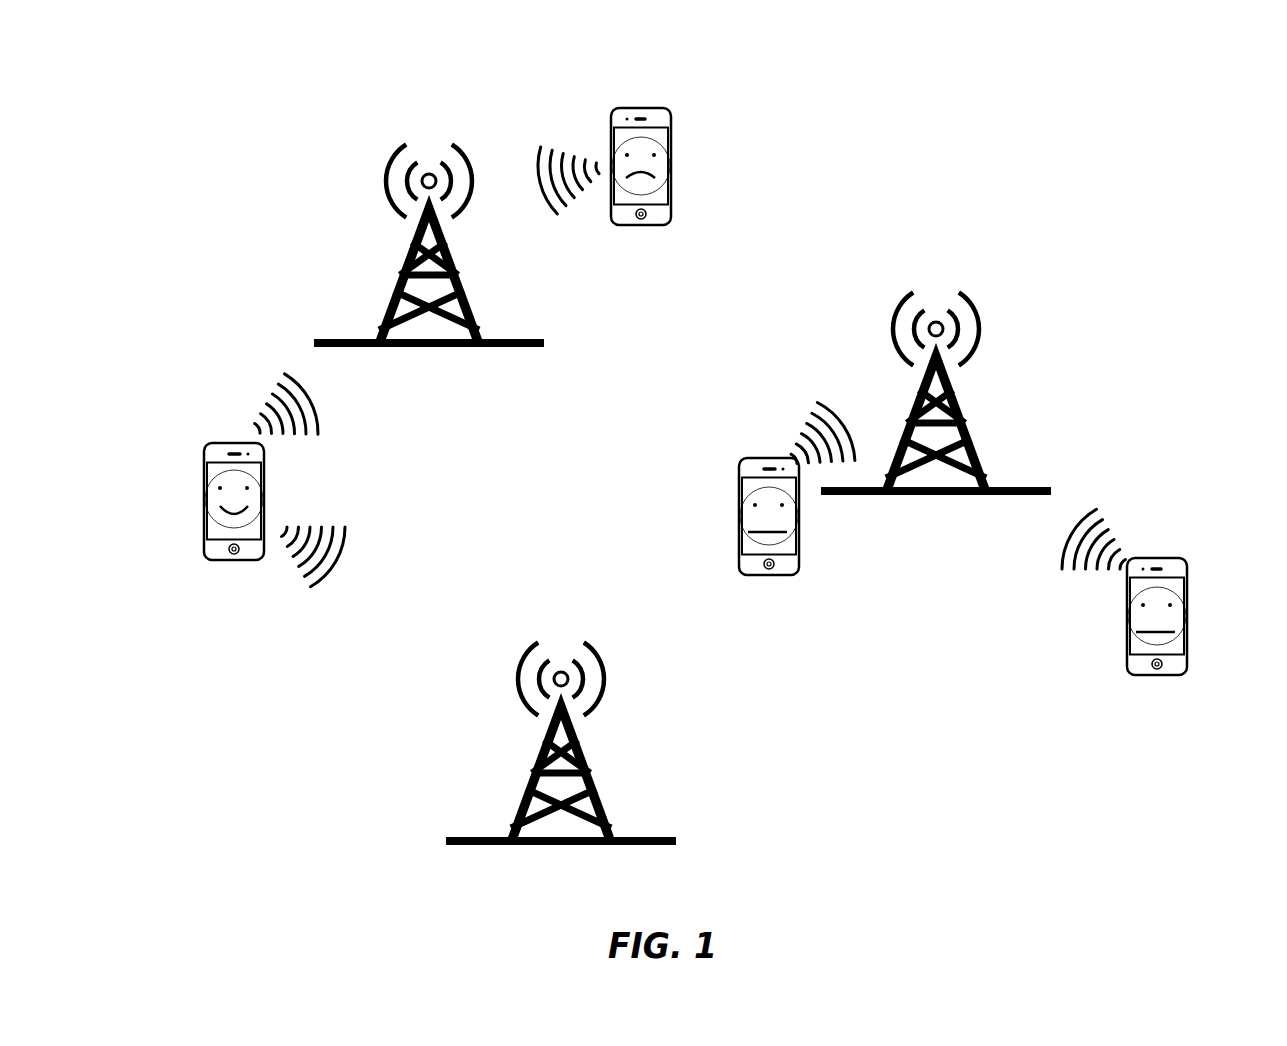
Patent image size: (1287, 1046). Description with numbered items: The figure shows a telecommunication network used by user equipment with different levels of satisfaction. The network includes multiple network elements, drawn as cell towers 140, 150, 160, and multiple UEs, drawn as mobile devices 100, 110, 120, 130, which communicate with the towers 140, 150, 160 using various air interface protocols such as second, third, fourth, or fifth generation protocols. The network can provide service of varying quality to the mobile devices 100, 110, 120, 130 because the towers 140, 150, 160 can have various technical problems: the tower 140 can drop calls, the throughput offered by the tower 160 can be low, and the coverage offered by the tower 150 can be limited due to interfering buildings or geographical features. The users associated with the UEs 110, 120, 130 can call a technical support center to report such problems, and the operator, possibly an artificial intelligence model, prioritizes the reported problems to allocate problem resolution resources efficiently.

The user equipment (UE) 100 is at (206, 557).
The user equipment (UE) 110 is at (648, 110).
The user equipment (UE) 120 is at (1152, 562).
The user equipment (UE) 130 is at (758, 575).
The tower 140 is at (377, 332).
The tower 150 is at (527, 788).
The tower 160 is at (970, 432).